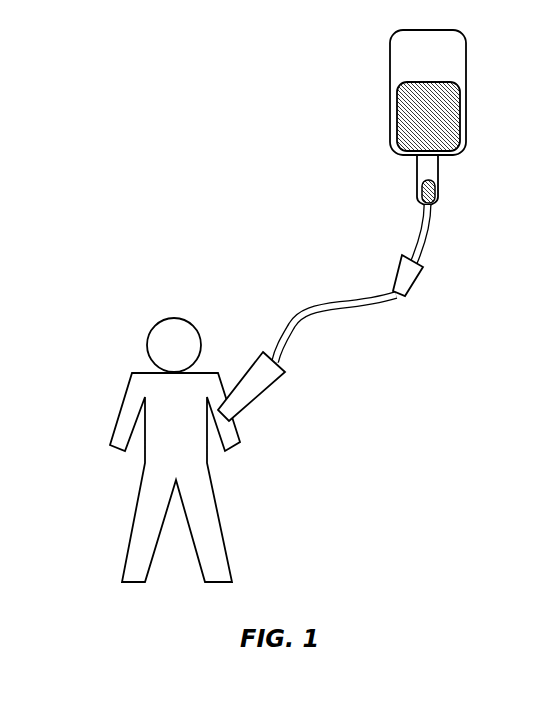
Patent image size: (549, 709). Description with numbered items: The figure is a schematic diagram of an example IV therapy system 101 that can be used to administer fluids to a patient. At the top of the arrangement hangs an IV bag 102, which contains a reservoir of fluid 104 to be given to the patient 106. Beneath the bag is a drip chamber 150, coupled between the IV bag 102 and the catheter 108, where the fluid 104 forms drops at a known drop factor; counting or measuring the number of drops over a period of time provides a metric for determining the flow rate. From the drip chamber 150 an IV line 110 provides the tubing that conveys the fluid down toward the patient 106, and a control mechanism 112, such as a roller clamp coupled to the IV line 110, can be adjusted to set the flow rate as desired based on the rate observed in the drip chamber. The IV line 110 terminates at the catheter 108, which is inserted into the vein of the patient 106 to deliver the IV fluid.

The IV therapy system 101 is at (136, 119).
The IV bag 102 is at (390, 58).
The fluid 104 is at (397, 118).
The drip chamber 150 is at (417, 172).
The IV line 110 is at (299, 308).
The control mechanism 112 is at (401, 270).
The patient 106 is at (125, 398).
The catheter 108 is at (287, 373).